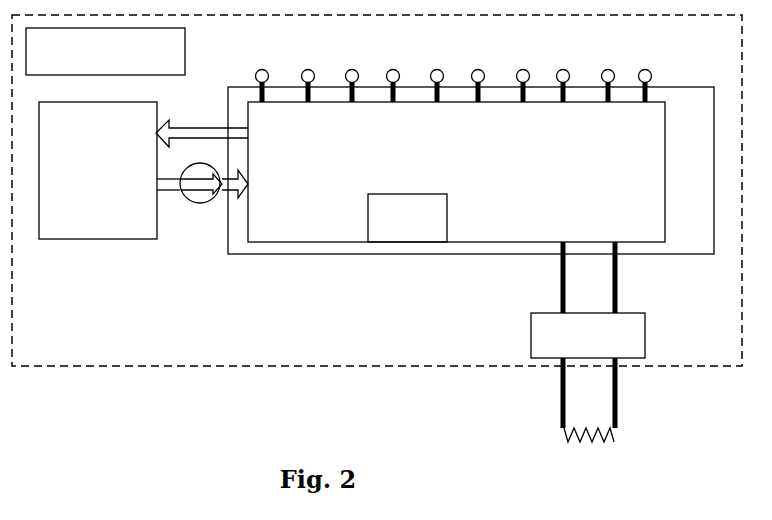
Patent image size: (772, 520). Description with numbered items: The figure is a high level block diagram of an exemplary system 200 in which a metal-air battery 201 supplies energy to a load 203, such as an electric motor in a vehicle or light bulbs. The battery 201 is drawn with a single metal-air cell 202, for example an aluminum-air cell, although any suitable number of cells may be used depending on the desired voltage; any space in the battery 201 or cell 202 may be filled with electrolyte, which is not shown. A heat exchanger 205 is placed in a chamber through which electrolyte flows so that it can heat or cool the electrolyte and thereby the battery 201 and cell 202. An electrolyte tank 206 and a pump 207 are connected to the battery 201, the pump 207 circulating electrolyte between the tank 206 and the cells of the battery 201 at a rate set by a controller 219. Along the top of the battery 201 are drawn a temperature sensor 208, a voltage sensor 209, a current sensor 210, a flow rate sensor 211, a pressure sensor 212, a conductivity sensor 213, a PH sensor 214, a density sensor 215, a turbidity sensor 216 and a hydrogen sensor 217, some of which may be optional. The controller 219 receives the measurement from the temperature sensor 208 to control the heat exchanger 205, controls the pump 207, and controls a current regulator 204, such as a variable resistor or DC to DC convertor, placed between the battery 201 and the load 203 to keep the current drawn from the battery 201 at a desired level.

The system 200 is at (320, 386).
The metal-air battery 201 is at (471, 170).
The metal-air cell 202 is at (456, 172).
The load 203 is at (589, 419).
The current regulator 204 is at (588, 335).
The heat exchanger 205 is at (407, 218).
The electrolyte tank 206 is at (98, 170).
The pump 207 is at (202, 200).
The temperature sensor 208 is at (645, 67).
The voltage sensor 209 is at (608, 67).
The current sensor 210 is at (563, 67).
The flow rate sensor 211 is at (523, 67).
The pressure sensor 212 is at (478, 67).
The conductivity sensor 213 is at (437, 67).
The PH sensor 214 is at (393, 67).
The density sensor 215 is at (352, 67).
The turbidity sensor 216 is at (308, 67).
The hydrogen sensor 217 is at (262, 67).
The controller 219 is at (187, 62).